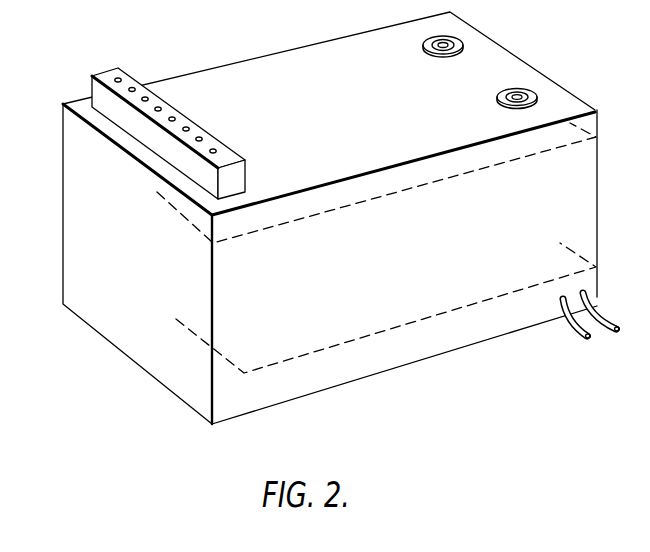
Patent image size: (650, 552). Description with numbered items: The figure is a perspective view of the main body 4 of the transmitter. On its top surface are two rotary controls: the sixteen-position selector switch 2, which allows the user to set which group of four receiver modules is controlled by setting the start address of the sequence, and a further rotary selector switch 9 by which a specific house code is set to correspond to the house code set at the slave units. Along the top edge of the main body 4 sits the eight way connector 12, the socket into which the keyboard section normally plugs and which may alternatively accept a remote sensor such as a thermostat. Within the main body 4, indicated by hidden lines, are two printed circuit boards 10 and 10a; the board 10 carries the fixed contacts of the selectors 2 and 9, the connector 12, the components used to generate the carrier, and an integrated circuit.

The selector switch 2 is at (425, 44).
The main body 4 is at (538, 72).
The rotary selector switch 9 is at (498, 97).
The printed circuit board 10 is at (350, 206).
The printed circuit board 10a is at (329, 350).
The eight way connector 12 is at (95, 86).